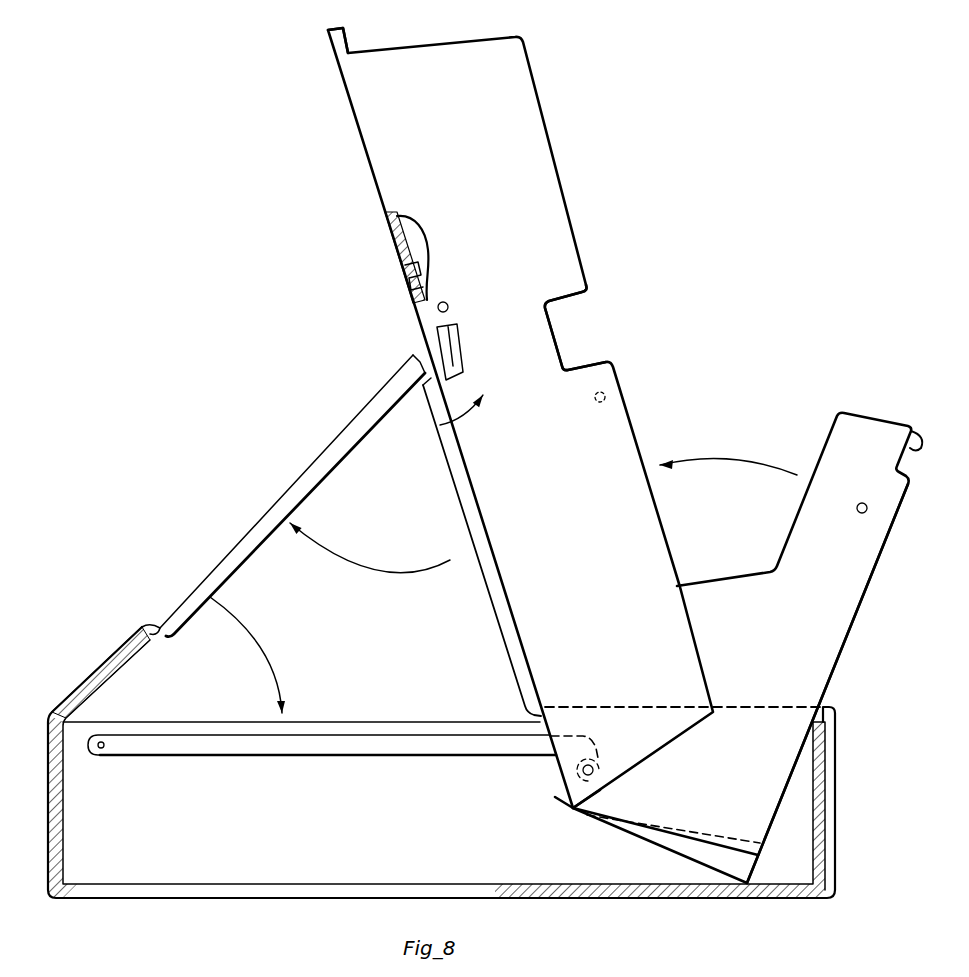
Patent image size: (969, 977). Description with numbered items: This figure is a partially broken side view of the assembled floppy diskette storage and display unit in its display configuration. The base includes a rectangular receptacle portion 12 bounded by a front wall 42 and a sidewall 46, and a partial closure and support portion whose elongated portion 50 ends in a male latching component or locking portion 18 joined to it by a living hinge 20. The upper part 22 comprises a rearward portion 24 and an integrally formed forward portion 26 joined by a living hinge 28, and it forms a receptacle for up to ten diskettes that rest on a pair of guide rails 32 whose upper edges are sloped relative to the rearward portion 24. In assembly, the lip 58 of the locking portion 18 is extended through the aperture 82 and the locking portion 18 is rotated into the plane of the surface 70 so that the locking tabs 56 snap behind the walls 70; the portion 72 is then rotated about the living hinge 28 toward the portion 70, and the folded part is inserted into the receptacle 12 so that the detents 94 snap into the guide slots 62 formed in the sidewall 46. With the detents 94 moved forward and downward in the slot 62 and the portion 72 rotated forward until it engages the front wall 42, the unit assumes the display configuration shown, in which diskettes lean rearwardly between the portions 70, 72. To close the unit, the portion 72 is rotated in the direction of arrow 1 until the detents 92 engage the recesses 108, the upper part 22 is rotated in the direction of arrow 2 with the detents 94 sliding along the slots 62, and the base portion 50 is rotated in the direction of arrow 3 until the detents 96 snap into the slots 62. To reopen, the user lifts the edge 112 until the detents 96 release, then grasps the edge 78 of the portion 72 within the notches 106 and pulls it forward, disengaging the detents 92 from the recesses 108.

The arrow 1 is at (738, 458).
The arrow 2 is at (380, 567).
The arrow 3 is at (277, 651).
The rectangular receptacle portion 12 is at (48, 825).
The male latching component 18 is at (405, 310).
The living hinge 20 is at (420, 358).
The upper part 22 is at (583, 243).
The rearward portion 24 is at (444, 416).
The forward portion 26 is at (803, 545).
The living hinge 28 is at (573, 810).
The guide rails 32 is at (708, 832).
The front wall 42 is at (835, 812).
The sidewall 46 is at (348, 829).
The elongated portion 50 is at (193, 570).
The locking tabs 56 is at (440, 330).
The rearwardly extending lip 58 is at (417, 262).
The guide slots 62 is at (375, 740).
The surface/wall 70 is at (498, 593).
The forward portion 72 is at (840, 655).
The edge 78 is at (914, 427).
The aperture 82 is at (427, 282).
The detents 92 is at (861, 503).
The detents 94 is at (600, 762).
The detents 96 is at (447, 302).
The notches 106 is at (560, 305).
The recesses 108 is at (594, 396).
The edge 112 is at (353, 36).